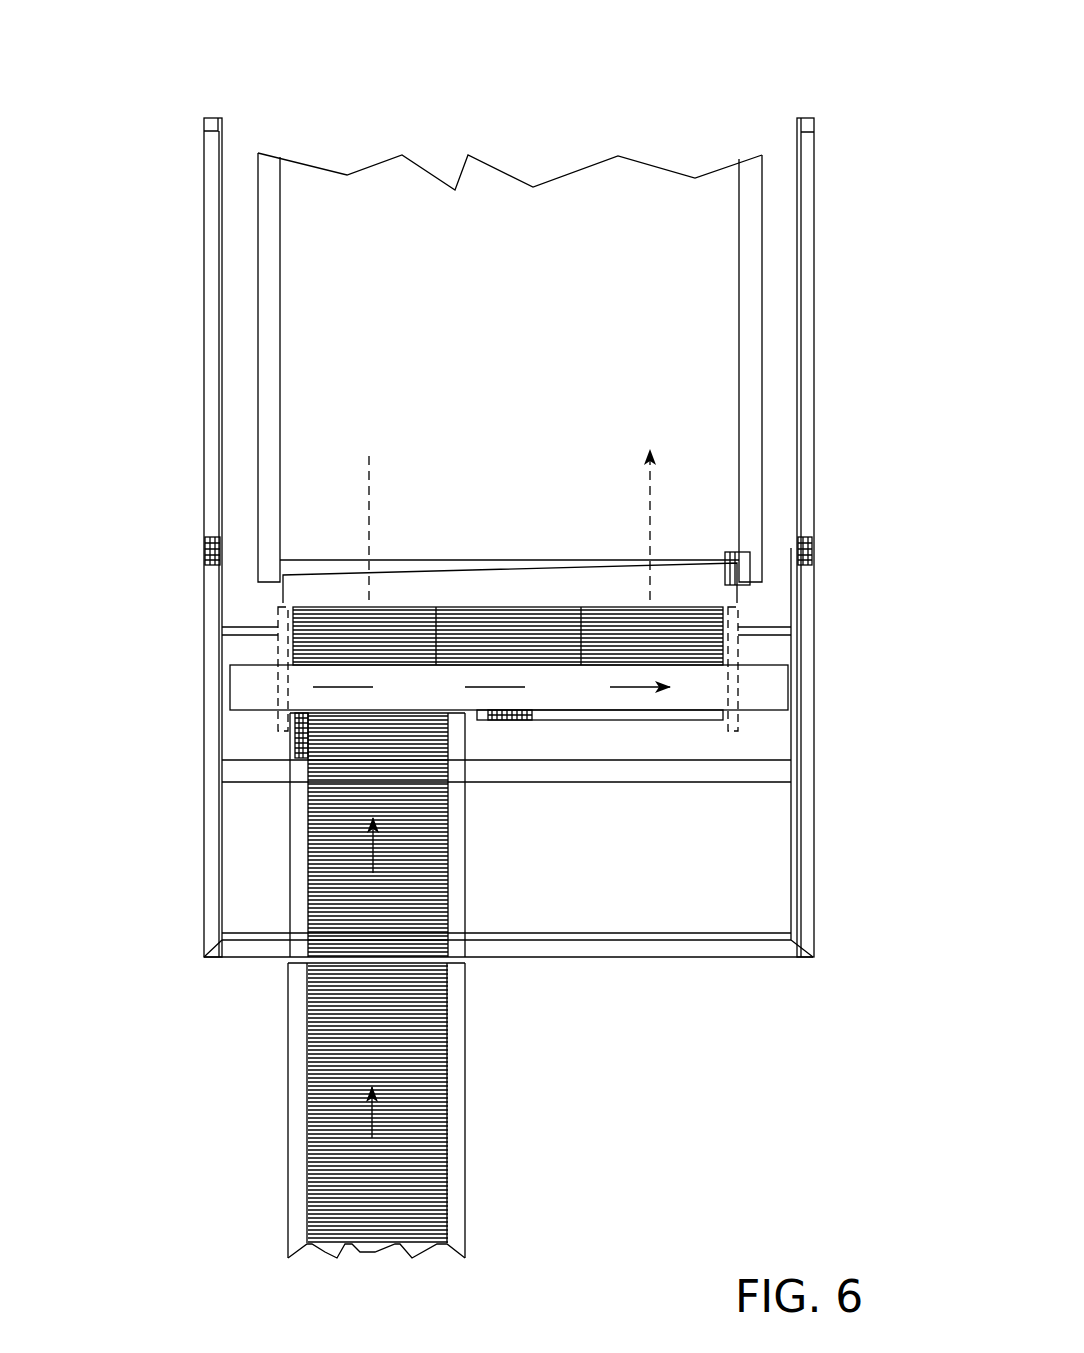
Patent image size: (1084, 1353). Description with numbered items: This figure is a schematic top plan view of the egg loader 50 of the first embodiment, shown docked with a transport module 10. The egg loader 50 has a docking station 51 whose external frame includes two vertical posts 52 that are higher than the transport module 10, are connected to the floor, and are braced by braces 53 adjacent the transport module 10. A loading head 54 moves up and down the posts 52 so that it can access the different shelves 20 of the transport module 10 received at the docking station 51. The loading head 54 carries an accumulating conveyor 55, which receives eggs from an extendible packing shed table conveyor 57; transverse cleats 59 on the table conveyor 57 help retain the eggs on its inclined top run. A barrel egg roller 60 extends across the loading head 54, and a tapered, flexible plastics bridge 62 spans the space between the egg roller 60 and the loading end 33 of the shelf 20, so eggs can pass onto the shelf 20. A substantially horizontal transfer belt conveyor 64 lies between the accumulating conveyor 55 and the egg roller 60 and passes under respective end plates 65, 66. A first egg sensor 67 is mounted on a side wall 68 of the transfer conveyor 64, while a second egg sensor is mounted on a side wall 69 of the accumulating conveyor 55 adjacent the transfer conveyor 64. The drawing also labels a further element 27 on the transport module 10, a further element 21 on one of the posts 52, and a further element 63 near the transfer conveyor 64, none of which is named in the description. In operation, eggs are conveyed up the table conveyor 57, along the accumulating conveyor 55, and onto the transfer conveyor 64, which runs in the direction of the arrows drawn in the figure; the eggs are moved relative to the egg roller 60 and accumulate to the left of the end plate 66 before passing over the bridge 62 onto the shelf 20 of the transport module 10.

The transport module 10 is at (684, 108).
The shelf 20 is at (275, 348).
The panel sheet 27 is at (350, 295).
The loading end 33 is at (272, 582).
The docking station 51 is at (808, 272).
The brace 53 is at (268, 906).
The left latch 21 is at (208, 570).
The vertical post 52 is at (814, 552).
The bridge 62 is at (503, 590).
The egg roller 60 is at (290, 650).
The end plate 66 is at (738, 680).
The transfer belt conveyor 64 is at (705, 694).
The end plate 65 is at (278, 687).
The side wall 68 is at (640, 722).
The first egg sensor 67 is at (510, 722).
The filter 63 is at (300, 745).
The side wall 69 is at (298, 866).
The accumulating conveyor 55 is at (478, 882).
The loading head 54 is at (822, 943).
The egg loader 50 is at (752, 1035).
The packing shed table conveyor 57 is at (500, 1127).
The transverse cleat 59 is at (445, 1013).